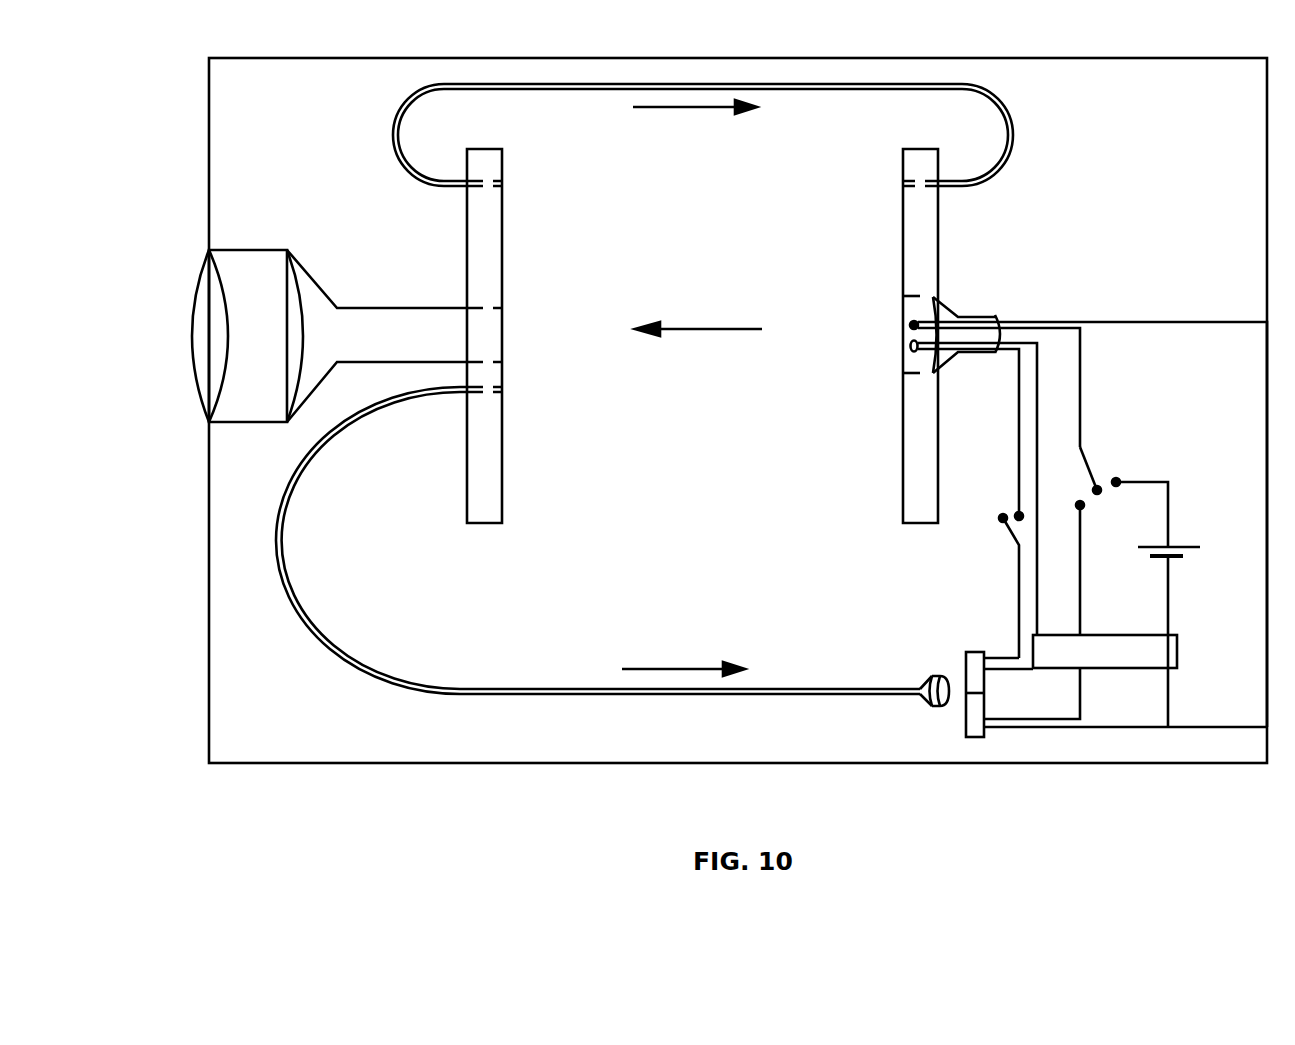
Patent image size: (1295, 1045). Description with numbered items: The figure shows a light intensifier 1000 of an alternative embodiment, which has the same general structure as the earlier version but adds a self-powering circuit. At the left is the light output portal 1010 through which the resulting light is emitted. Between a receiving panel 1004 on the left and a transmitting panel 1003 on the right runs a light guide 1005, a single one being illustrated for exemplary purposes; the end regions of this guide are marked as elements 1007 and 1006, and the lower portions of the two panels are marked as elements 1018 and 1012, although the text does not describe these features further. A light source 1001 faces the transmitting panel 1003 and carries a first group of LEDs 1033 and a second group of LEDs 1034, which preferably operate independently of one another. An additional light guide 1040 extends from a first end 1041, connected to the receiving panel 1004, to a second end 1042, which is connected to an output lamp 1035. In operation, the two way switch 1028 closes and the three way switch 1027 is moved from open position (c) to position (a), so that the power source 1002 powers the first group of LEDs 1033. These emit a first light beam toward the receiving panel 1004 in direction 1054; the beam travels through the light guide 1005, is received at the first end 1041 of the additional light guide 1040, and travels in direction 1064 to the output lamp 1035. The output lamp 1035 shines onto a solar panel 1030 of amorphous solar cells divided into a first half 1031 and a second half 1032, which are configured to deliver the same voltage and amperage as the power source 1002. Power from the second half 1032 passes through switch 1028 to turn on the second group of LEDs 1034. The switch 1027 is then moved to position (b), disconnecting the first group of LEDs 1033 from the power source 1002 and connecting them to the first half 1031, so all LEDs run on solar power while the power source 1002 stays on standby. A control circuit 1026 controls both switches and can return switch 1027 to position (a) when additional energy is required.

The light intensifier 1000 is at (280, 36).
The light output portal 1010 is at (258, 250).
The light guides 1005 is at (815, 87).
The left loop end 1007 is at (457, 180).
The right loop end 1006 is at (943, 178).
The receiving panel 1004 is at (493, 270).
The first coupler lower portion 1018 is at (503, 440).
The transmitting panel 1003 is at (925, 262).
The second coupler lower portion 1012 is at (903, 440).
The first end 1041 is at (458, 393).
The additional light guide 1040 is at (485, 688).
The second end 1042 is at (905, 697).
The output lamp 1035 is at (930, 678).
The direction 1064 is at (675, 107).
The direction 1054 is at (720, 328).
The light source 1001 is at (985, 312).
The first group of LEDs 1033 is at (912, 323).
The second group of LEDs 1034 is at (912, 345).
The three way switch 1027 is at (1103, 470).
The two way switch 1028 is at (1007, 528).
The power source 1002 is at (1160, 556).
The control circuit 1026 is at (1178, 647).
The solar panel 1030 is at (975, 652).
The second half 1032 is at (985, 680).
The first half 1031 is at (985, 735).